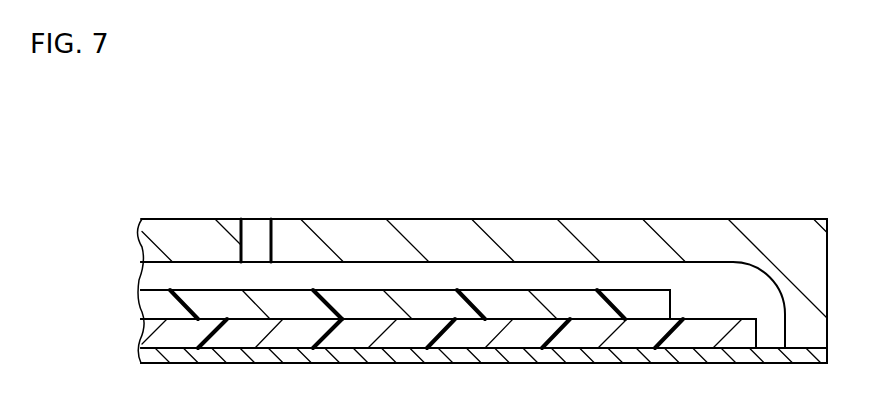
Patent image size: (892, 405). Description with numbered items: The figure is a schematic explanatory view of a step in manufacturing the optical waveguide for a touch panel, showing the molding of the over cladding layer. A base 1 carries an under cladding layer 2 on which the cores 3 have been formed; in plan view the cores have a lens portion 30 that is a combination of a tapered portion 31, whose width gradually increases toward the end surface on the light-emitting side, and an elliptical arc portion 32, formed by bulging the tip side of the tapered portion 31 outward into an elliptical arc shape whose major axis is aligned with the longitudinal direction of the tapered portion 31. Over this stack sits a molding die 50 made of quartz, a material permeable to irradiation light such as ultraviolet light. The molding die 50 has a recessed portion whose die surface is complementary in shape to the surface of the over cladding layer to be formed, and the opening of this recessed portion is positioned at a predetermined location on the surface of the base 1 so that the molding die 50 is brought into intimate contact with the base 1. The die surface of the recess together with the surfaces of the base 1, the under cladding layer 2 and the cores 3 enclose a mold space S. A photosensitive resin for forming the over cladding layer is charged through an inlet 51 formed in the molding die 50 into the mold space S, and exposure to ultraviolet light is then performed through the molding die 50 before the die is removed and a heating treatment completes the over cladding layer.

The base 1 is at (147, 357).
The under cladding layer 2 is at (142, 330).
The cores 3 is at (150, 303).
The lens portion 30 is at (712, 157).
The tapered portion 31 is at (510, 300).
The elliptical arc portion 32 is at (673, 300).
The molding die 50 is at (183, 232).
The inlet 51 is at (267, 232).
The mold space S is at (367, 277).